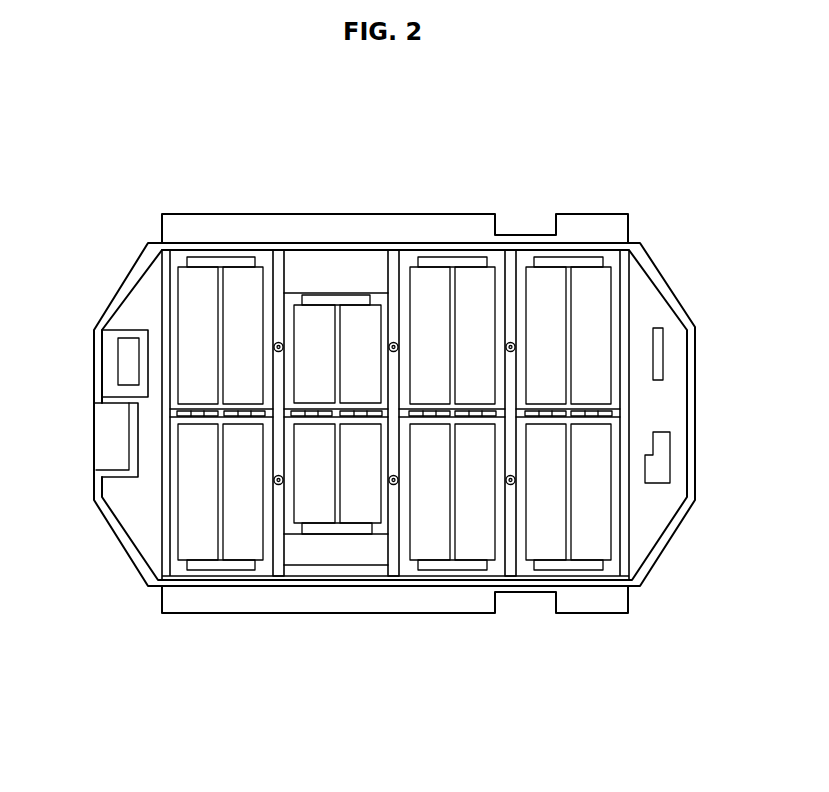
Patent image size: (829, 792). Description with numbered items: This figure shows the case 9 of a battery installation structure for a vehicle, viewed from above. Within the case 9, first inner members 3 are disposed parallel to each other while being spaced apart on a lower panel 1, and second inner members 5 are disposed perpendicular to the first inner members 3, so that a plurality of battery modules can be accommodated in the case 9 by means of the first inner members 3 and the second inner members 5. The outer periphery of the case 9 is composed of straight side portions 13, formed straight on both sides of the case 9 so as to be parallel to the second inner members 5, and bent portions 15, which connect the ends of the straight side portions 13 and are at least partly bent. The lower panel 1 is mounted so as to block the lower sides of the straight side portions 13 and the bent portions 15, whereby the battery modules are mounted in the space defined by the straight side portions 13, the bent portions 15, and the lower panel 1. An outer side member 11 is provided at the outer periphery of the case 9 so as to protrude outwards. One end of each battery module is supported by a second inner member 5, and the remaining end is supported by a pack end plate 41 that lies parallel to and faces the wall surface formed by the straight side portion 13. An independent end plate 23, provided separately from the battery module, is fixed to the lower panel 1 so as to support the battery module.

The lower panel 1 is at (297, 272).
The first inner member 3 is at (396, 570).
The second inner member 5 is at (218, 402).
The case 9 is at (313, 130).
The outer side member 11 is at (410, 224).
The straight side portion 13 is at (223, 246).
The bent portion 15 is at (135, 272).
The independent end plate 23 is at (345, 300).
The pack end plate 41 is at (443, 258).